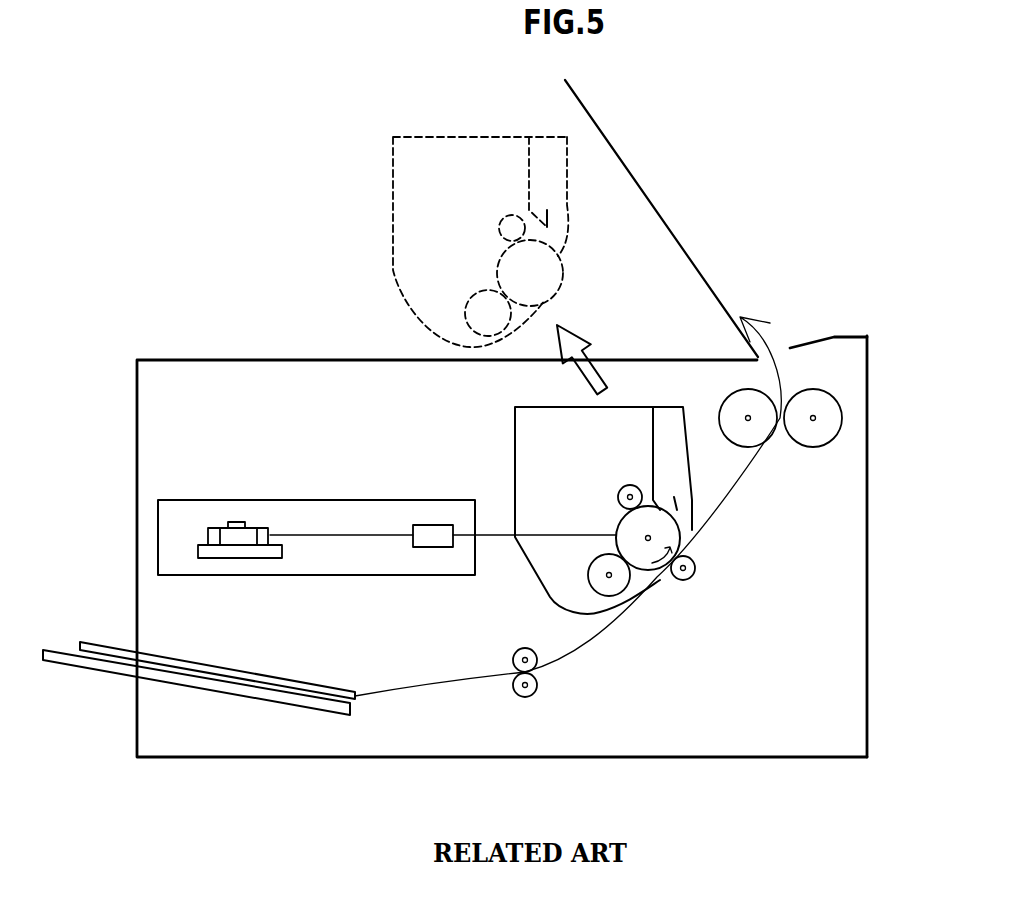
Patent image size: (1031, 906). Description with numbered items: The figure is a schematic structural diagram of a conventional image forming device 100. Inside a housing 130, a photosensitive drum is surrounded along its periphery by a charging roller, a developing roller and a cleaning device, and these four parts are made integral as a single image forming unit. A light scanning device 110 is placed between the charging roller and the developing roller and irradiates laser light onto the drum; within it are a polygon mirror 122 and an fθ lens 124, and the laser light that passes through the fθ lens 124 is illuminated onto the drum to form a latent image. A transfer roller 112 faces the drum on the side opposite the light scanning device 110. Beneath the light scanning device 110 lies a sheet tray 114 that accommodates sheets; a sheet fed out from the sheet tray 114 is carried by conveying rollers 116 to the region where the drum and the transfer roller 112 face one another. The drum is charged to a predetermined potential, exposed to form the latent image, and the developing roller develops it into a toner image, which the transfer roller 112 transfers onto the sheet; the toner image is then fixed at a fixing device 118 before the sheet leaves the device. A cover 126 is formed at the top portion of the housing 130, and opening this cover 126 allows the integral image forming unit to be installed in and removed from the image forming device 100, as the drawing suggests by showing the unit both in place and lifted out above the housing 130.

The image forming device 100 is at (917, 490).
The light scanning device 110 is at (327, 489).
The transfer roller 112 is at (696, 577).
The sheet tray 114 is at (287, 707).
The conveying rollers 116 is at (538, 693).
The fixing device 118 is at (789, 456).
The polygon mirror 122 is at (222, 527).
The fθ lens 124 is at (432, 524).
The cover 126 is at (623, 165).
The housing 130 is at (868, 689).